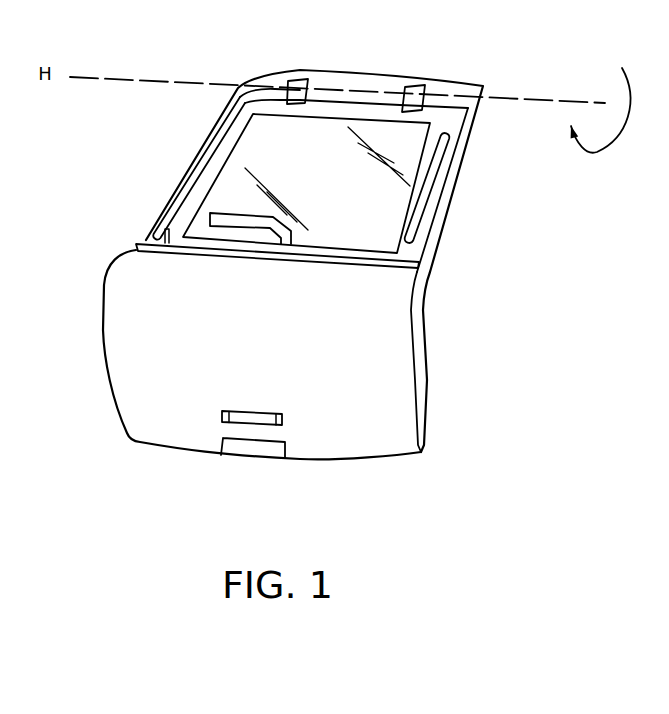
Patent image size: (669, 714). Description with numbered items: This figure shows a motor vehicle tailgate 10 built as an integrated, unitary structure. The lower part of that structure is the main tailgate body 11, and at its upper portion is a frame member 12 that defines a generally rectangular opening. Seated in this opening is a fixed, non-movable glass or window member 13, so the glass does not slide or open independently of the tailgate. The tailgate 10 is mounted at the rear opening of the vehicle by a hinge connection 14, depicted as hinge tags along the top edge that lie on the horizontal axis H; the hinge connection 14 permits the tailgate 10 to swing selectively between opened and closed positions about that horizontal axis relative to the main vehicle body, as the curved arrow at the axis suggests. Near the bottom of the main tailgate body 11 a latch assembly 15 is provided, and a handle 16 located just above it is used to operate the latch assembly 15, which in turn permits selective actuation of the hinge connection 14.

The tailgate 10 is at (85, 240).
The main tailgate body 11 is at (405, 388).
The frame member 12 is at (422, 228).
The glass or window member 13 is at (233, 180).
The hinge connection 14 is at (297, 82).
The latch assembly 15 is at (267, 450).
The handle 16 is at (273, 412).